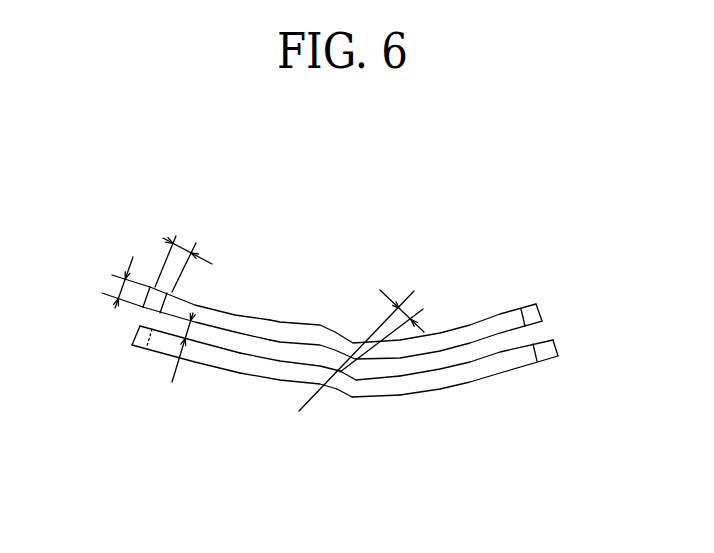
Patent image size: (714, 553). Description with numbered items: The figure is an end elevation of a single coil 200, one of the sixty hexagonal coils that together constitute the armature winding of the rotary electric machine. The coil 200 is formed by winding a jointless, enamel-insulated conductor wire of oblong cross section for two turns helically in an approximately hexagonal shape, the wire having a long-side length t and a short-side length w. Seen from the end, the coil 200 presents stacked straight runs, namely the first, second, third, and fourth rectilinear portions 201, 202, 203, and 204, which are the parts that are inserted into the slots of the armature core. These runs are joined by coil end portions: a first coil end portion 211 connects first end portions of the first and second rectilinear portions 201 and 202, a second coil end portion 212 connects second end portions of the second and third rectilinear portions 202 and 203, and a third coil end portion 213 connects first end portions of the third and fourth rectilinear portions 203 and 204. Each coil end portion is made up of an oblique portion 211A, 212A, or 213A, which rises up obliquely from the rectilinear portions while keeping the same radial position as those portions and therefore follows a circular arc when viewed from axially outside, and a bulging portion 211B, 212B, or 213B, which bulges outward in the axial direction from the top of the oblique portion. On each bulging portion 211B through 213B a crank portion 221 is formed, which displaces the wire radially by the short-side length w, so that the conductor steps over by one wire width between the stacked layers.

The coil 200 is at (124, 162).
The first rectilinear portion 201 is at (146, 311).
The second rectilinear portion 202 is at (544, 305).
The third rectilinear portion 203 is at (131, 347).
The fourth rectilinear portion 204 is at (556, 348).
The first coil end portion 211 is at (377, 232).
The oblique portion 211A is at (273, 320).
The bulging portion 211B is at (334, 329).
The second coil end portion 212 is at (298, 441).
The oblique portion 212A is at (233, 363).
The bulging portion 212B is at (310, 388).
The third coil end portion 213 is at (490, 462).
The oblique portion 213A is at (422, 390).
The bulging portion 213B is at (349, 398).
The crank portion 221 is at (337, 378).